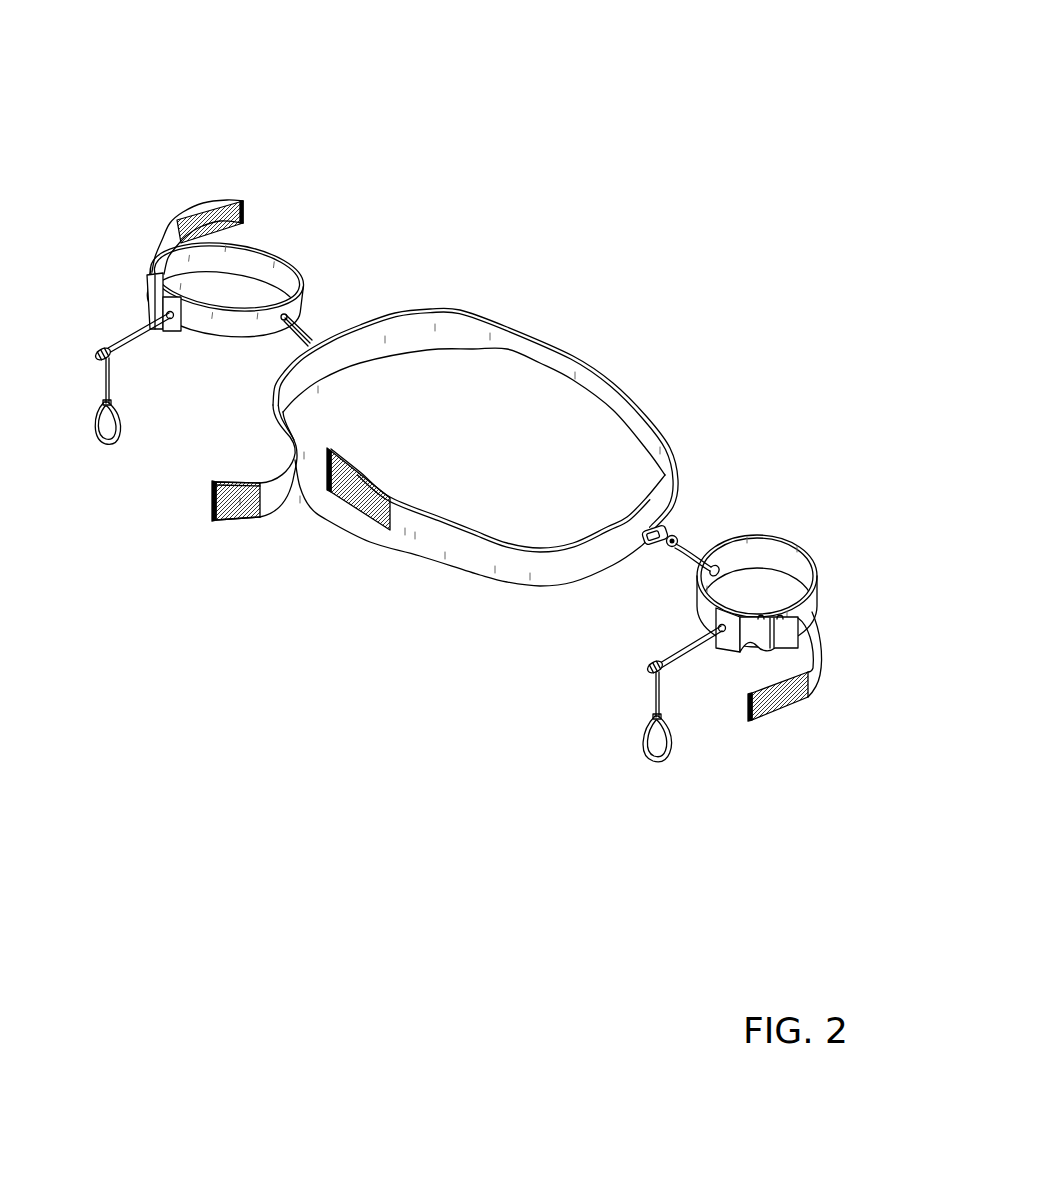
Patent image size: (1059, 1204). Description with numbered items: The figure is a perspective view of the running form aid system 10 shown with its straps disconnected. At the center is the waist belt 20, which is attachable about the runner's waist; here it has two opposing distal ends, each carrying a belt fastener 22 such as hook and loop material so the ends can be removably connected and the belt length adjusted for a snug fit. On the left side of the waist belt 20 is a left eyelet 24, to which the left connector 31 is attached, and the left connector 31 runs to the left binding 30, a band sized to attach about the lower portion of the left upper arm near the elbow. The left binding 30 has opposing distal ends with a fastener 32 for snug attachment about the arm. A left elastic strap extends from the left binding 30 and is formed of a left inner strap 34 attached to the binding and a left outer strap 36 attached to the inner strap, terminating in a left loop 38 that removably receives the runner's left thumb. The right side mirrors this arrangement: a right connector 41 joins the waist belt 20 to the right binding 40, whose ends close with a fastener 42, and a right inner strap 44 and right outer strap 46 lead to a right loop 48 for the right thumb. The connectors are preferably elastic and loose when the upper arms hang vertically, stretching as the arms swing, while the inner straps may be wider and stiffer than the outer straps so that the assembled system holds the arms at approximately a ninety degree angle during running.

The running form aid system 10 is at (676, 99).
The waist belt 20 is at (623, 369).
The belt fastener 22 is at (356, 500).
The left eyelet 24 is at (668, 545).
The left binding 30 is at (795, 535).
The left connector 31 is at (694, 546).
The fastener 32 is at (782, 700).
The left inner strap 34 is at (683, 650).
The left outer strap 36 is at (655, 697).
The left loop 38 is at (646, 752).
The right binding 40 is at (300, 244).
The right connector 41 is at (307, 343).
The fastener 42 is at (204, 218).
The right inner strap 44 is at (132, 326).
The right outer strap 46 is at (110, 379).
The right loop 48 is at (107, 448).